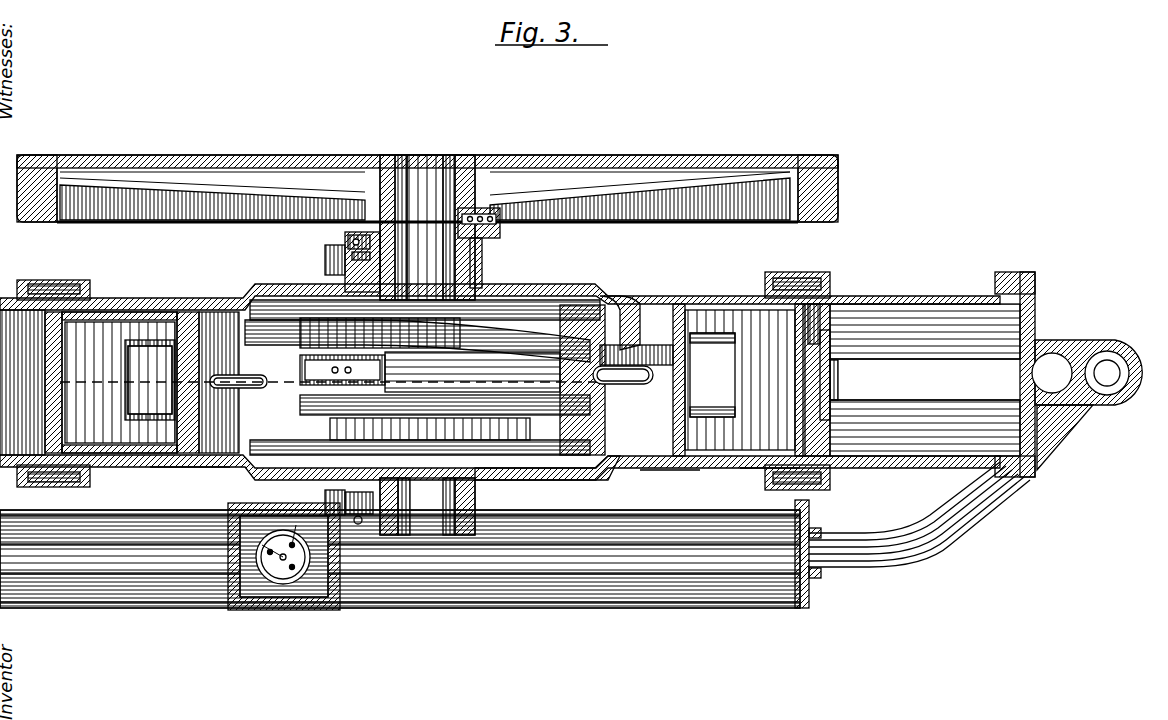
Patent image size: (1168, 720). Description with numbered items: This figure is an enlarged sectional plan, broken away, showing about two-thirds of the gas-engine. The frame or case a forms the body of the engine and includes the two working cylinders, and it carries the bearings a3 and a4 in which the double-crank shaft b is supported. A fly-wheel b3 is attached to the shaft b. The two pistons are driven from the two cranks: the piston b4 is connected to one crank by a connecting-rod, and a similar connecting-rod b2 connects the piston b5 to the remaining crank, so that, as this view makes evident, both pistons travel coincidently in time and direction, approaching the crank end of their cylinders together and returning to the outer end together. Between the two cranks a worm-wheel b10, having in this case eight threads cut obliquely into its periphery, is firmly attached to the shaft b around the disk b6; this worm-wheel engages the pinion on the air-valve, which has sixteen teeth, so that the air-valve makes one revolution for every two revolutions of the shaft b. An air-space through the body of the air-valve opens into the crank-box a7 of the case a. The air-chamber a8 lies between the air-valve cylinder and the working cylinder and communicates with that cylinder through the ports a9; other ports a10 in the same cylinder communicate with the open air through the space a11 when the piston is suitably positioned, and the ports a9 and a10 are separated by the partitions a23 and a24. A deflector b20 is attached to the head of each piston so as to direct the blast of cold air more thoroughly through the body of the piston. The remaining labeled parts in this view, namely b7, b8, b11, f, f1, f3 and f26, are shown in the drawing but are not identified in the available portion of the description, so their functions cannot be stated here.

The frame or case a is at (265, 294).
The bearing a3 is at (488, 482).
The bearing a4 is at (482, 262).
The crank-box a7 is at (986, 387).
The air-chamber a8 is at (818, 272).
The ports a9 is at (840, 315).
The ports a10 is at (830, 435).
The space a11 is at (760, 462).
The partition a23 is at (670, 477).
The partition a24 is at (190, 477).
The double-crank shaft b is at (427, 345).
The connecting-rod b2 is at (190, 378).
The fly-wheel b3 is at (838, 192).
The piston b4 is at (735, 365).
The piston b5 is at (62, 380).
The disk b6 is at (430, 379).
The connecting rod b7 is at (628, 356).
The slotted link b8 is at (232, 385).
The worm-wheel b10 is at (620, 296).
The guide bracket b11 is at (500, 218).
The deflector b20 is at (838, 380).
The lower tube f is at (540, 606).
The tube cap f1 is at (808, 510).
The bent rod f3 is at (825, 528).
The bearing block f26 is at (300, 505).